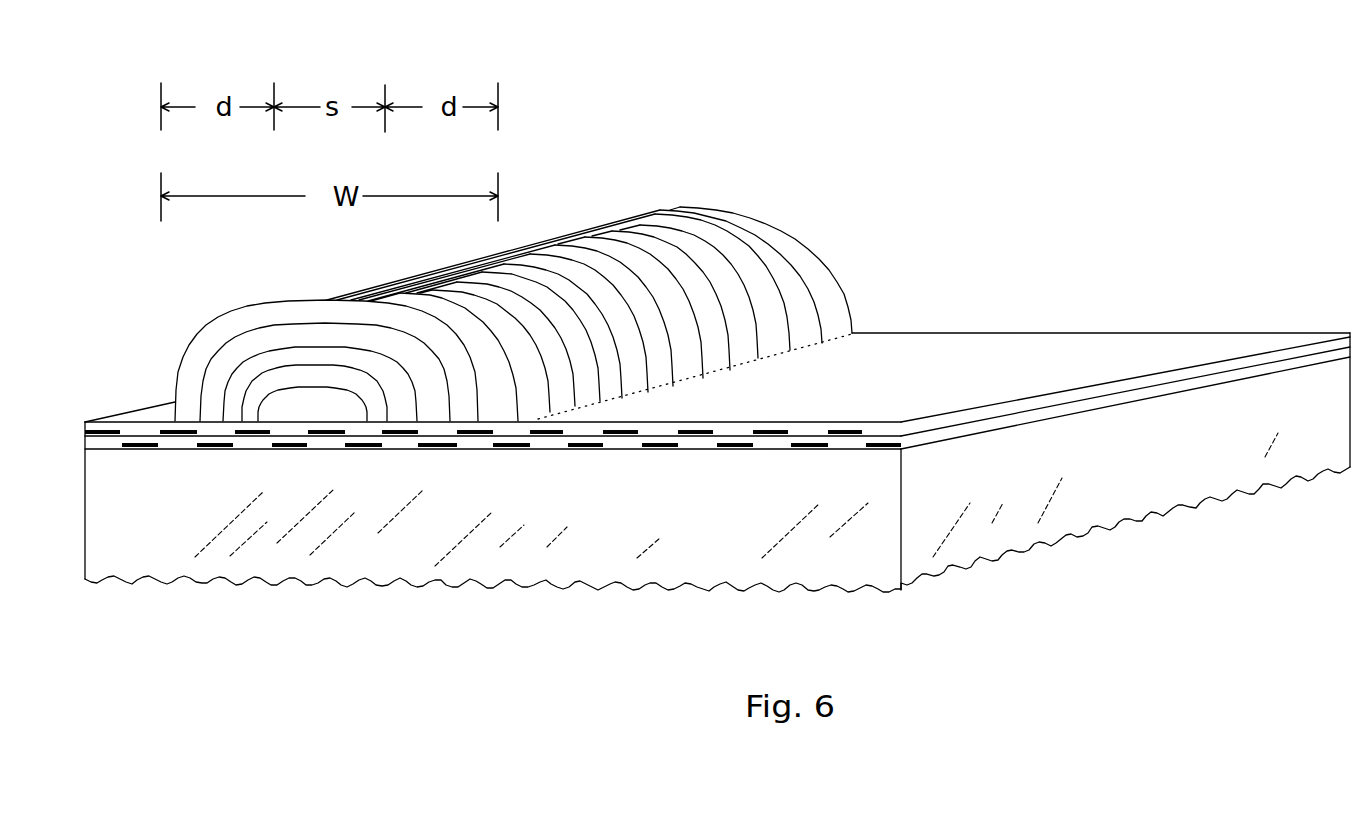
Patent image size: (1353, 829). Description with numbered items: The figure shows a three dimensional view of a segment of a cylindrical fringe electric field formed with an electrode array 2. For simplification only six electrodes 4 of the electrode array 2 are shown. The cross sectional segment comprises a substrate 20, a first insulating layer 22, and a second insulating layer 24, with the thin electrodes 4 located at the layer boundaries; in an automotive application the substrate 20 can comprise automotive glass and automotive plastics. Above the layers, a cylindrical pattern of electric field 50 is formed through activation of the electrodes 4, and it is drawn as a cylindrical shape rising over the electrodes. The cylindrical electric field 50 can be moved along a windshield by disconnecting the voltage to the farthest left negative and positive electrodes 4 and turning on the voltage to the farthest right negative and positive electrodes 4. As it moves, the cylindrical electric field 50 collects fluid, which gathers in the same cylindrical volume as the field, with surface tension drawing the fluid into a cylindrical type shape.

The electrode array 2 is at (867, 363).
The electrodes 4 is at (847, 432).
The substrate 20 is at (708, 543).
The first insulating layer 22 is at (1187, 388).
The second insulating layer 24 is at (1098, 392).
The cylindrical electric field 50 is at (267, 362).